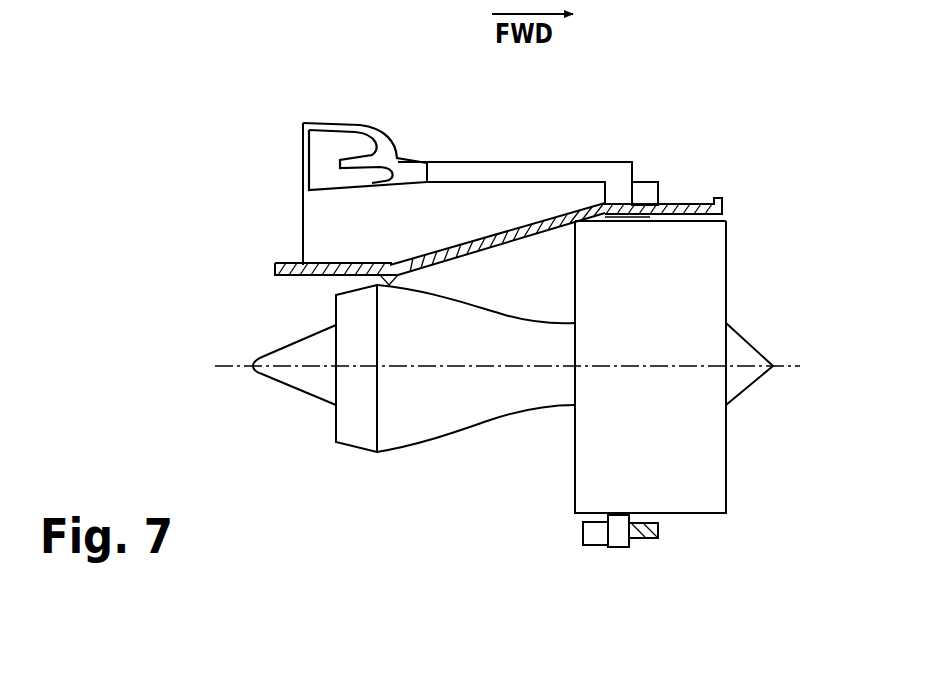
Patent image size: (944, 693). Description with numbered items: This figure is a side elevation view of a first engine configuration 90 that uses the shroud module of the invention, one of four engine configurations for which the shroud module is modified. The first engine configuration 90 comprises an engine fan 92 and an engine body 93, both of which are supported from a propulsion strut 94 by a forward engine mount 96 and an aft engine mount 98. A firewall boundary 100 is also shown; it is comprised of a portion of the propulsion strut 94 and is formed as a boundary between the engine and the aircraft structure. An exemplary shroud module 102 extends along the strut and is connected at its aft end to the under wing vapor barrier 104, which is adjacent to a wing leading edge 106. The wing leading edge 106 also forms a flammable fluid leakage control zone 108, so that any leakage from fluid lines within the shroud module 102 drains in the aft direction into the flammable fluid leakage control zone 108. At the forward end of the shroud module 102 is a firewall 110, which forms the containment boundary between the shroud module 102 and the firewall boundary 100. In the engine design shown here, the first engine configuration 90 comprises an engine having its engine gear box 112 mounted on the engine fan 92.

The first engine configuration 90 is at (710, 112).
The engine fan 92 is at (598, 460).
The engine body 93 is at (407, 452).
The propulsion strut 94 is at (650, 188).
The forward engine mount 96 is at (657, 220).
The aft engine mount 98 is at (377, 284).
The firewall boundary 100 is at (723, 202).
The shroud module 102 is at (568, 162).
The under wing vapor barrier 104 is at (417, 162).
The wing leading edge 106 is at (337, 142).
The flammable fluid leakage control zone 108 is at (322, 180).
The firewall 110 is at (622, 215).
The engine gear box 112 is at (625, 538).